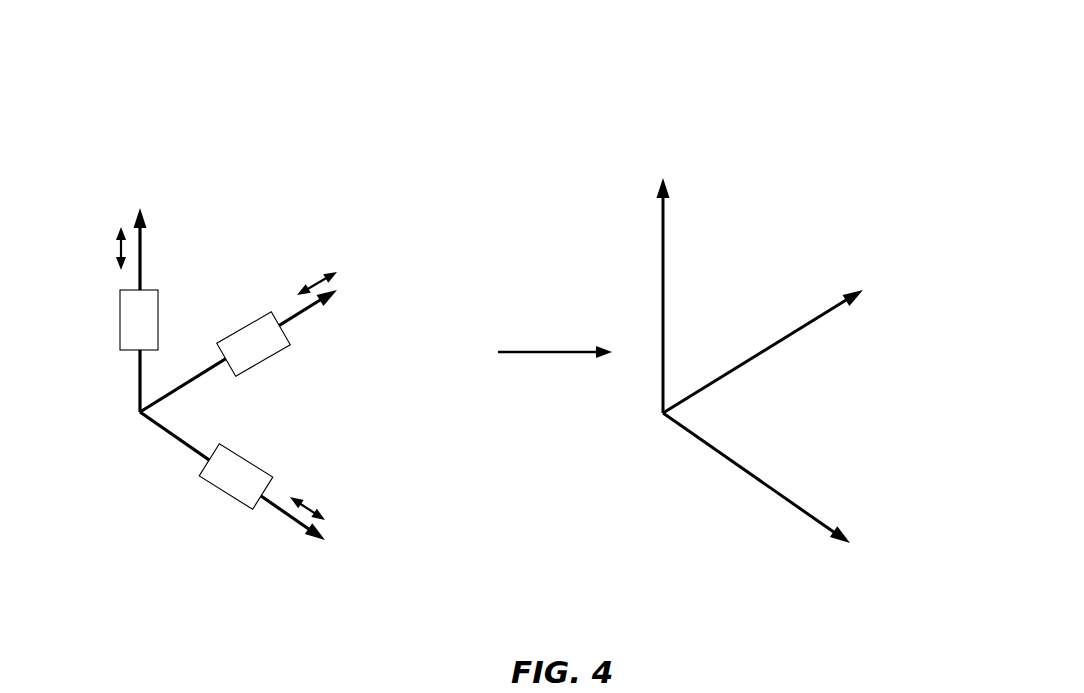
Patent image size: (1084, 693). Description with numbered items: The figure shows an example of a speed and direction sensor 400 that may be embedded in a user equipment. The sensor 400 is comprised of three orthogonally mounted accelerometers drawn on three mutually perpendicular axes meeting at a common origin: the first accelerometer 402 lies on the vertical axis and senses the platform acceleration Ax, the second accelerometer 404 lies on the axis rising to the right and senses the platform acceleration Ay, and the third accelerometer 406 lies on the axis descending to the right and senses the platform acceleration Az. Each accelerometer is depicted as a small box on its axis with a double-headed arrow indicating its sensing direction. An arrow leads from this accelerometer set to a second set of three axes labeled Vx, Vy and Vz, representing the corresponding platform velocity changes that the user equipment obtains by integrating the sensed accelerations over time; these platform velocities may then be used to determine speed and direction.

The sensor axis transformation diagram 400 is at (495, 43).
The first accelerometer 402 is at (122, 318).
The second accelerometer 404 is at (246, 330).
The third accelerometer 406 is at (271, 476).